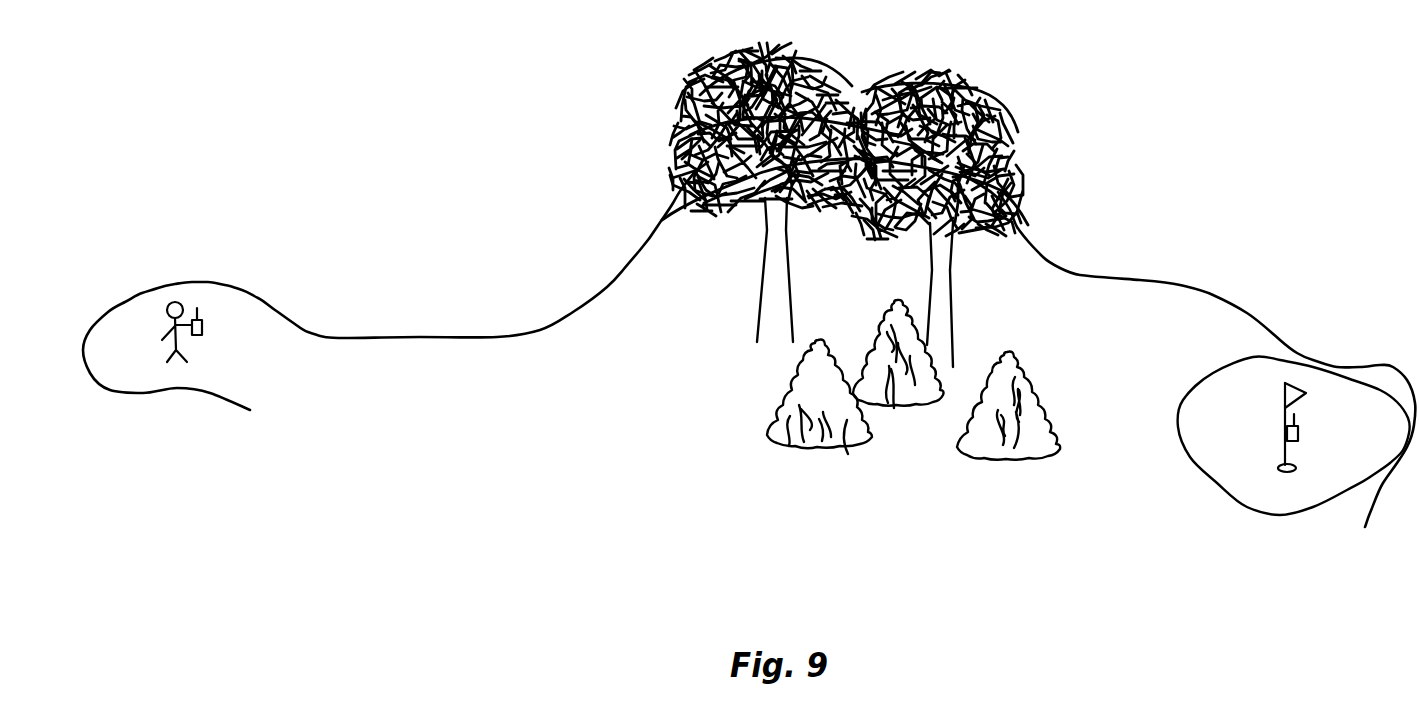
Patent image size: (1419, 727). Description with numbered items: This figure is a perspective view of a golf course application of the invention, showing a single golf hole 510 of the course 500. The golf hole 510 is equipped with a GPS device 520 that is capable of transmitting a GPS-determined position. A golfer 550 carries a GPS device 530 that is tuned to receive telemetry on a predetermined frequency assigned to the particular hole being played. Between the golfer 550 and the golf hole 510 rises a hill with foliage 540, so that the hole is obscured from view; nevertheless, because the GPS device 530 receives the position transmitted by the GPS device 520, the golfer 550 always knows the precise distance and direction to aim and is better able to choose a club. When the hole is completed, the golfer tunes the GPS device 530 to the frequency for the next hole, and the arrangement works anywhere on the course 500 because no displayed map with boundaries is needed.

The course 500 is at (372, 438).
The golf hole 510 is at (1278, 466).
The GPS device 520 is at (1302, 433).
The GPS device 530 is at (203, 328).
The foliage 540 is at (730, 387).
The golfer 550 is at (170, 308).